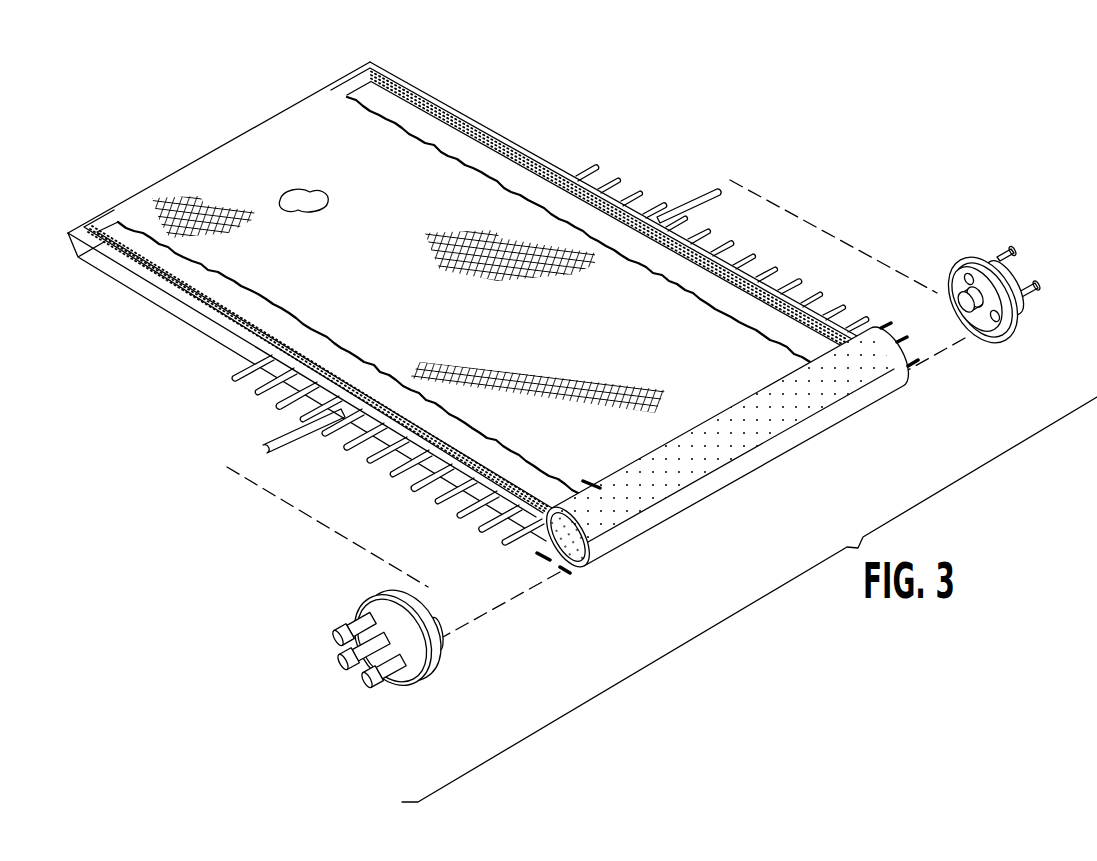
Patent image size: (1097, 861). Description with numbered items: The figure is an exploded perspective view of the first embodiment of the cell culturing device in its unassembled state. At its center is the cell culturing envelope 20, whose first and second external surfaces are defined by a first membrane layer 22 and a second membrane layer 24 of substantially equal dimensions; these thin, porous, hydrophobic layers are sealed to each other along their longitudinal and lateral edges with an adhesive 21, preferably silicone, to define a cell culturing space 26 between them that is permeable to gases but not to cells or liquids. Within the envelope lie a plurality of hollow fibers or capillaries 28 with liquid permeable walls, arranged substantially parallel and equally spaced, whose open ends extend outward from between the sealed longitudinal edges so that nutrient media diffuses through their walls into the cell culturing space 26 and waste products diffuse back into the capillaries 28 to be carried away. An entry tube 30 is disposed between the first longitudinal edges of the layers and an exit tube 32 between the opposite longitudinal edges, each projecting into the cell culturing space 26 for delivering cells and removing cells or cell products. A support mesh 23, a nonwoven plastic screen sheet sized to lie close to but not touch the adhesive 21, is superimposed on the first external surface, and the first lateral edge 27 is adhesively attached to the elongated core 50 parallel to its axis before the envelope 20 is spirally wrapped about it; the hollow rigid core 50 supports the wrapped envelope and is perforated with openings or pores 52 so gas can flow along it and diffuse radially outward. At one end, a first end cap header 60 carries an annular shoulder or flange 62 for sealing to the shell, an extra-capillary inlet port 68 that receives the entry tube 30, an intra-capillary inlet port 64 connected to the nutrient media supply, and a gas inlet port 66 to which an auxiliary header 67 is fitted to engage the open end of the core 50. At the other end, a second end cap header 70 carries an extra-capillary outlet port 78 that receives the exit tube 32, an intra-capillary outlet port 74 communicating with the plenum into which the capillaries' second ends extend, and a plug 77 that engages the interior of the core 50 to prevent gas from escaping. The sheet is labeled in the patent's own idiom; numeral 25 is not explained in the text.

The cell culturing envelope 20 is at (475, 88).
The adhesive 21 is at (387, 82).
The first membrane layer 22 is at (147, 247).
The support mesh 23 is at (168, 195).
The second membrane layer 24 is at (140, 292).
The top layer 25 is at (200, 158).
The cell culturing space 26 is at (302, 198).
The first lateral edge 27 is at (838, 412).
The hollow fibers or capillaries 28 is at (748, 262).
The entry tube 30 is at (282, 432).
The exit tube 32 is at (708, 192).
The elongated core 50 is at (782, 446).
The openings or pores 52 is at (650, 482).
The first end cap header 60 is at (385, 647).
The annular shoulder or flange 62 is at (372, 598).
The intra-capillary inlet port 64 is at (362, 688).
The gas inlet port 66 is at (345, 670).
The auxiliary header 67 is at (440, 618).
The extra-capillary inlet port 68 is at (330, 638).
The second end cap header 70 is at (1003, 292).
The intra-capillary outlet port 74 is at (1043, 300).
The plug 77 is at (962, 312).
The extra-capillary outlet port 78 is at (1010, 255).